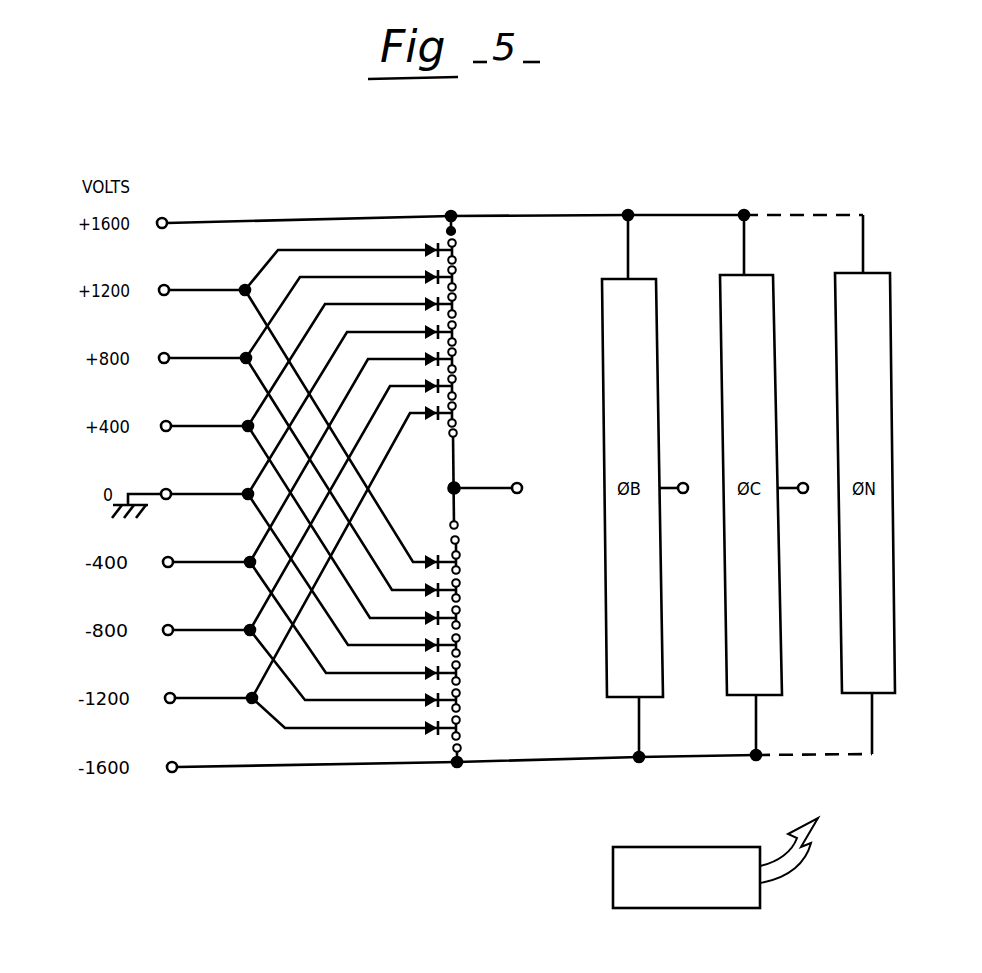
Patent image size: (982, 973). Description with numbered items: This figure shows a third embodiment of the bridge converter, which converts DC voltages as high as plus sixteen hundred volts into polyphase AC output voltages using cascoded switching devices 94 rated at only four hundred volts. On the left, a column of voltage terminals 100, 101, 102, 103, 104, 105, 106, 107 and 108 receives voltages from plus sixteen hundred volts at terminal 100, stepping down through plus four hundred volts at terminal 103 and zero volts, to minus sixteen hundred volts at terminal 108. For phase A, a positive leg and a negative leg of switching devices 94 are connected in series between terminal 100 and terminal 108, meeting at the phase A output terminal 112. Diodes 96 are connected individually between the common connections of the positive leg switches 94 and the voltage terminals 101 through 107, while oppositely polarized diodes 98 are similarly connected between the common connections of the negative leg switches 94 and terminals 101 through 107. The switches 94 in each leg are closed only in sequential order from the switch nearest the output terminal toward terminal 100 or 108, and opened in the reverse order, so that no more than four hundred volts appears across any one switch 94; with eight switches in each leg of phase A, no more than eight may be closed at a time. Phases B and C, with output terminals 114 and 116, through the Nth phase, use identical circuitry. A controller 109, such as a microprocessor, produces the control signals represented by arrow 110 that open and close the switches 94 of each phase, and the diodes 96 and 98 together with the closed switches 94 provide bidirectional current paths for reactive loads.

The switching device 94 is at (456, 231).
The diode 96 is at (429, 245).
The oppositely polarized diode 98 is at (430, 559).
The voltage terminal 100 is at (159, 229).
The voltage terminal 101 is at (161, 296).
The voltage terminal 102 is at (161, 364).
The voltage terminal 103 is at (163, 432).
The voltage terminal 104 is at (163, 500).
The voltage terminal 105 is at (165, 568).
The voltage terminal 106 is at (165, 636).
The voltage terminal 107 is at (167, 704).
The voltage terminal 108 is at (169, 773).
The controller 109 is at (661, 847).
The arrow 110 is at (807, 844).
The output terminal 112 is at (503, 477).
The output terminal 114 is at (681, 494).
The output terminal 116 is at (801, 494).